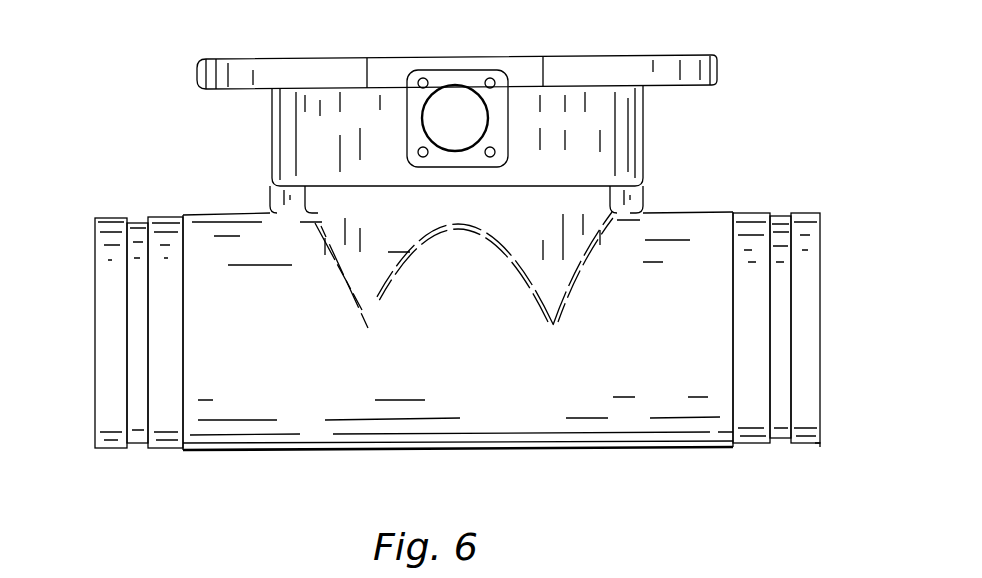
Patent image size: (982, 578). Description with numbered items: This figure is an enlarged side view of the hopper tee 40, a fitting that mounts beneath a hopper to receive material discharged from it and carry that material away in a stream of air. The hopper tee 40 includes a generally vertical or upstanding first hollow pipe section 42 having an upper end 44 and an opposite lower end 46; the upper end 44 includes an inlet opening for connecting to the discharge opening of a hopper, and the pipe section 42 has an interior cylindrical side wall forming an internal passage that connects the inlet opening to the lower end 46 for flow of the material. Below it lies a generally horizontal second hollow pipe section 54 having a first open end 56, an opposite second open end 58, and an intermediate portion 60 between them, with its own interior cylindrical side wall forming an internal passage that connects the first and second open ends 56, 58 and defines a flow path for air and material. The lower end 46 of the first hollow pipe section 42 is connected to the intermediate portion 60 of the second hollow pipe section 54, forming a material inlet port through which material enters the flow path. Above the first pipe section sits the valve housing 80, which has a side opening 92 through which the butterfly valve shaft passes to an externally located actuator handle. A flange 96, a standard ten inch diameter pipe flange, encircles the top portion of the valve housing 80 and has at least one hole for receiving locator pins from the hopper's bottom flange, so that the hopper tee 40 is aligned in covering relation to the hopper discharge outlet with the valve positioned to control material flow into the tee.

The hopper tee 40 is at (822, 446).
The first hollow pipe section 42 is at (643, 140).
The upper end 44 is at (272, 97).
The lower end 46 is at (557, 270).
The second hollow pipe section 54 is at (497, 450).
The first open end 56 is at (97, 430).
The second open end 58 is at (820, 418).
The intermediate portion 60 is at (434, 450).
The valve housing 80 is at (643, 103).
The side opening 92 is at (490, 110).
The flange 96 is at (717, 58).